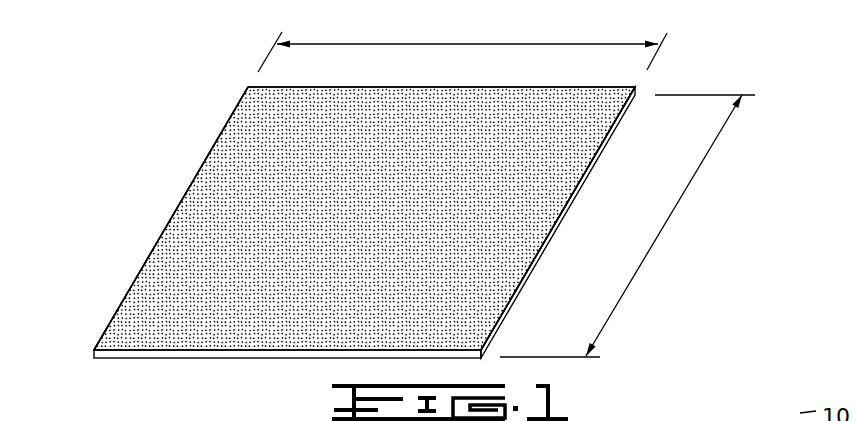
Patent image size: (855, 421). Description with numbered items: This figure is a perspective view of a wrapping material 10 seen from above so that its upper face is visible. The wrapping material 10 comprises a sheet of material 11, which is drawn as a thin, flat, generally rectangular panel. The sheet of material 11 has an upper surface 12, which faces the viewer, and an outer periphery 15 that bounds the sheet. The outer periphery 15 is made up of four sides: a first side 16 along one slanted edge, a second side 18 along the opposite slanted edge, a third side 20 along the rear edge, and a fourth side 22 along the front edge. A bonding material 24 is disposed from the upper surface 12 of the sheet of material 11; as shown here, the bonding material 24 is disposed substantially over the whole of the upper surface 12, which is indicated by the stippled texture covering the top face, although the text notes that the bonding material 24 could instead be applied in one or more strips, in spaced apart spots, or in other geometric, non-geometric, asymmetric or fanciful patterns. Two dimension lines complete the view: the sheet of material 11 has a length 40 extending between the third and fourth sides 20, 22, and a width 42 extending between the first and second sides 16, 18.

The wrapping material 10 is at (370, 223).
The sheet of material 11 is at (370, 233).
The upper surface 12 is at (268, 203).
The outer periphery 15 is at (551, 233).
The first side 16 is at (601, 154).
The second side 18 is at (133, 285).
The third side 20 is at (471, 87).
The fourth side 22 is at (200, 357).
The bonding material 24 is at (537, 148).
The length 40 is at (679, 207).
The width 42 is at (484, 45).